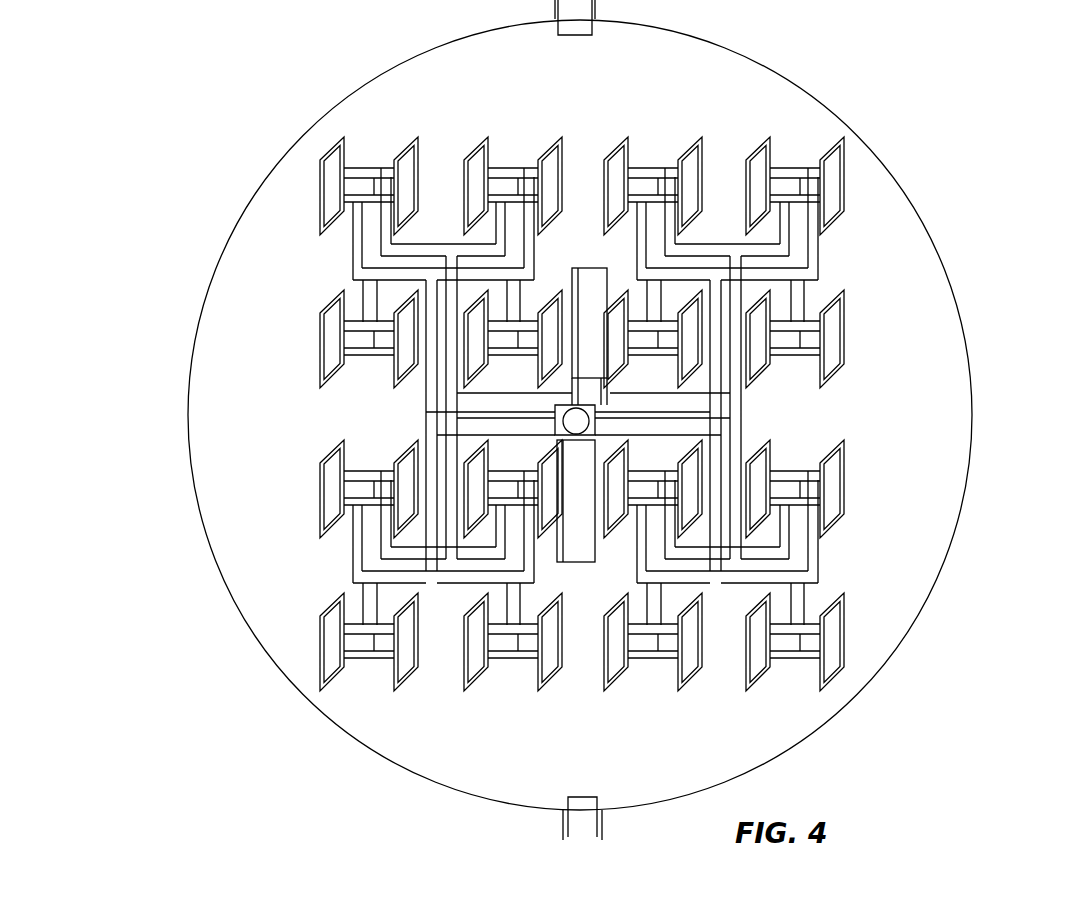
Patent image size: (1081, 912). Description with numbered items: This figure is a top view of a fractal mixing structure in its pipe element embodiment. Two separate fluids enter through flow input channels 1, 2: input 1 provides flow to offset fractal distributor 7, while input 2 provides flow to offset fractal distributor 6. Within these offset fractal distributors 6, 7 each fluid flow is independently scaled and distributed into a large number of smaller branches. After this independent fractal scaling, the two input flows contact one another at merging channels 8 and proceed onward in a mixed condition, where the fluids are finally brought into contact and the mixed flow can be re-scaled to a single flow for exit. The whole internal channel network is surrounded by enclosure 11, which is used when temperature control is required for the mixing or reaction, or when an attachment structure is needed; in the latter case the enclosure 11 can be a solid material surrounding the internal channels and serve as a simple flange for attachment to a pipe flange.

The flow input channel 1 is at (586, 266).
The flow input channel 2 is at (578, 564).
The offset fractal distributor 6 is at (424, 410).
The offset fractal distributor 7 is at (746, 405).
The merging channels 8 is at (340, 447).
The enclosure 11 is at (968, 360).